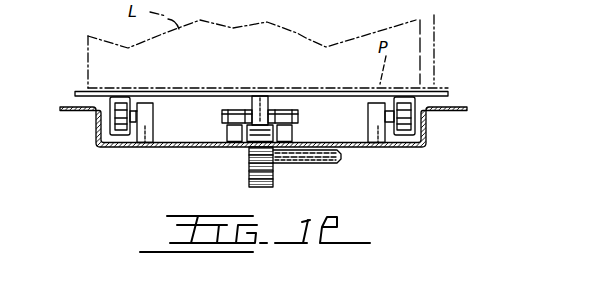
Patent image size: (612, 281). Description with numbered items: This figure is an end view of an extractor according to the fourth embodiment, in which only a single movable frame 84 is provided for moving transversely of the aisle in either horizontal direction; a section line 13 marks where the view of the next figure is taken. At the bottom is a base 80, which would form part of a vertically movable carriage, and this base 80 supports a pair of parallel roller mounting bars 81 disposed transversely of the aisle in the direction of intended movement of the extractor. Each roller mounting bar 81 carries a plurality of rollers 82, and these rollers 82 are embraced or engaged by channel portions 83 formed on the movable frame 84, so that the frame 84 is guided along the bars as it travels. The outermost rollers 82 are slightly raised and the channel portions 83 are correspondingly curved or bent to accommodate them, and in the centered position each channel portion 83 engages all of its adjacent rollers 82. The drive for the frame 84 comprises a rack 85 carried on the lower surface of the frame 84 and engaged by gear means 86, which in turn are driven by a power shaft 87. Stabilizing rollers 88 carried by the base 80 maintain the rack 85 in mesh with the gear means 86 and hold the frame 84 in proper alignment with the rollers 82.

The section line 13 is at (421, 37).
The base 80 is at (141, 148).
The roller mounting bars 81 is at (152, 116).
The rollers 82 is at (118, 108).
The channel portions 83 is at (400, 109).
The movable frame 84 is at (167, 91).
The rack 85 is at (266, 96).
The gear means 86 is at (248, 165).
The power shaft 87 is at (331, 163).
The stabilizing rollers 88 is at (246, 110).